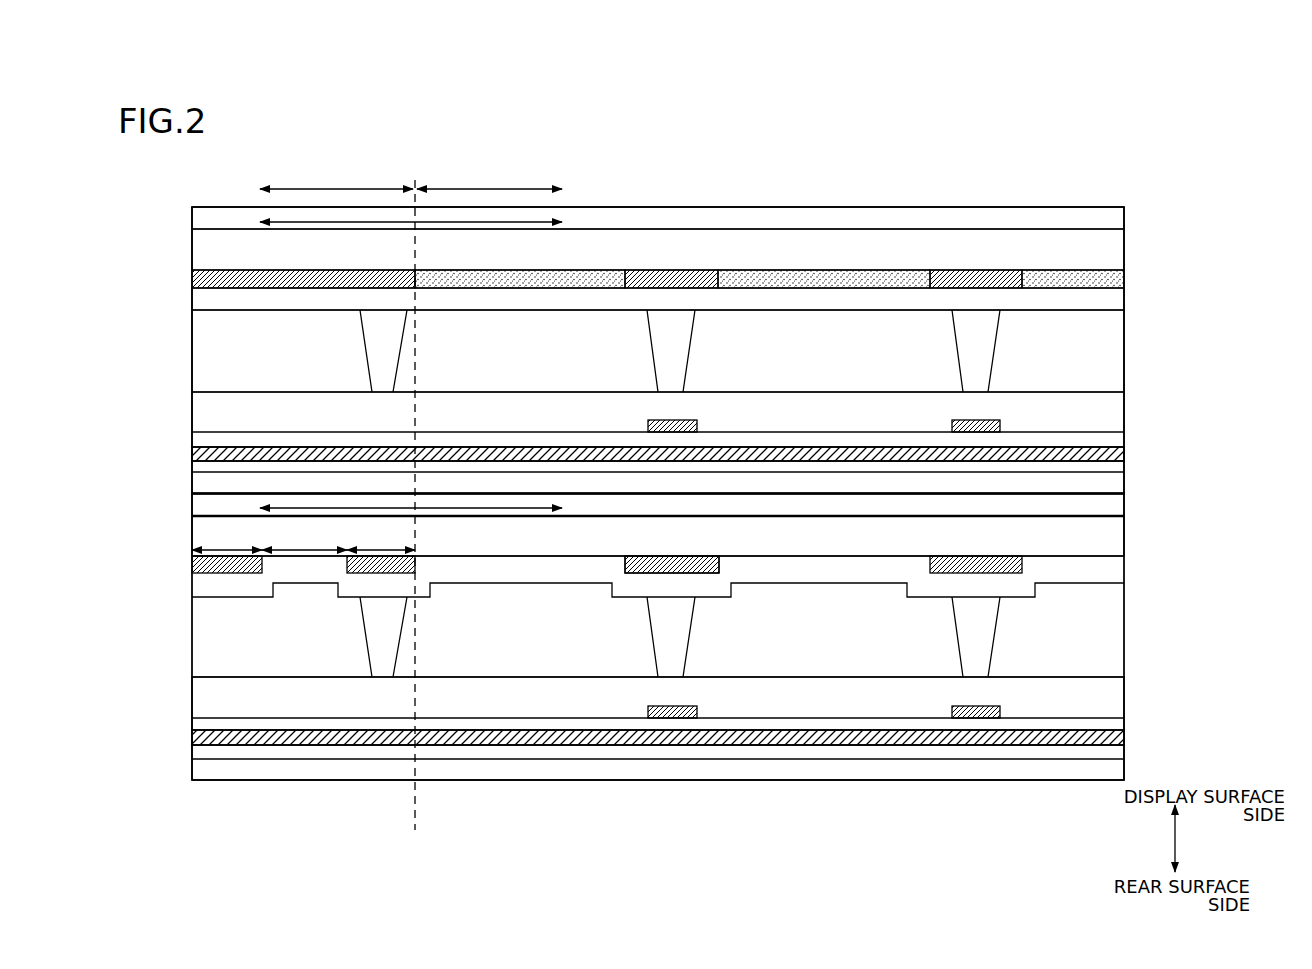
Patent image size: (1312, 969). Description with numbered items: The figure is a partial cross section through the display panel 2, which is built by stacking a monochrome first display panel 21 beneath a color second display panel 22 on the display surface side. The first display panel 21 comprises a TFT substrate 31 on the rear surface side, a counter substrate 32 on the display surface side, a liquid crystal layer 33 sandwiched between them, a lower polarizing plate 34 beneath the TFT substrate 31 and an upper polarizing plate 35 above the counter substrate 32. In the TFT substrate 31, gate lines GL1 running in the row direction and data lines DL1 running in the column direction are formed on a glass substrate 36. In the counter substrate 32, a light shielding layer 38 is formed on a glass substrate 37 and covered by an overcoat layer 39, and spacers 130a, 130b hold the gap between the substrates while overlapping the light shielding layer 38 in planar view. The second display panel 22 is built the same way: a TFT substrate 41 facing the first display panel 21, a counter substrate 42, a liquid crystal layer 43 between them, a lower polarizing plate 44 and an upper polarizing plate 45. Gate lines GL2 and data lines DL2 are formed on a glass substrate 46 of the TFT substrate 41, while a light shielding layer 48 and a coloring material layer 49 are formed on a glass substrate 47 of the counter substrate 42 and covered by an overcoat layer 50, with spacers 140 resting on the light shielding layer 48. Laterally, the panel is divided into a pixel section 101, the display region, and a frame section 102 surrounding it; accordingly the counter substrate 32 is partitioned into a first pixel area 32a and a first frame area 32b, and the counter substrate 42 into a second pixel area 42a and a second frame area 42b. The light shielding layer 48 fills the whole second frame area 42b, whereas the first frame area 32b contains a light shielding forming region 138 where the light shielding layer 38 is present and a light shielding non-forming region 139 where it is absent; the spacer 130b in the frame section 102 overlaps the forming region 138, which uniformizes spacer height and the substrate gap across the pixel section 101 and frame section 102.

The display panel 2 is at (1114, 181).
The first display panel 21 is at (135, 502).
The second display panel 22 is at (135, 207).
The TFT substrate 31 is at (628, 756).
The counter substrate 32 is at (187, 520).
The liquid crystal layer 33 is at (628, 640).
The lower polarizing plate 34 is at (1110, 772).
The upper polarizing plate 35 is at (1110, 508).
The glass substrate 36 is at (1110, 750).
The glass substrate 37 is at (1110, 530).
The light shielding layer 38 is at (622, 568).
The overcoat layer 39 is at (1110, 570).
The TFT substrate 41 is at (628, 405).
The counter substrate 42 is at (628, 228).
The liquid crystal layer 43 is at (628, 351).
The lower polarizing plate 44 is at (1110, 485).
The upper polarizing plate 45 is at (1110, 221).
The glass substrate 46 is at (1110, 463).
The glass substrate 47 is at (1110, 261).
The light shielding layer 48 is at (672, 270).
The coloring material layer 49 is at (820, 270).
The overcoat layer 50 is at (1110, 298).
The pixel section 101 is at (489, 176).
The frame section 102 is at (336, 176).
The spacer 130a is at (955, 628).
The spacer 130b is at (364, 627).
The light shielding forming region 138 is at (303, 537).
The light shielding non-forming region 139 is at (304, 537).
The spacer 140 is at (364, 340).
The first pixel area 32a is at (528, 508).
The first frame area 32b is at (393, 508).
The second pixel area 42a is at (523, 222).
The second frame area 42b is at (383, 222).
The data line DL1 is at (673, 718).
The data line DL2 is at (672, 420).
The gate line GL1 is at (837, 745).
The gate line GL2 is at (737, 447).